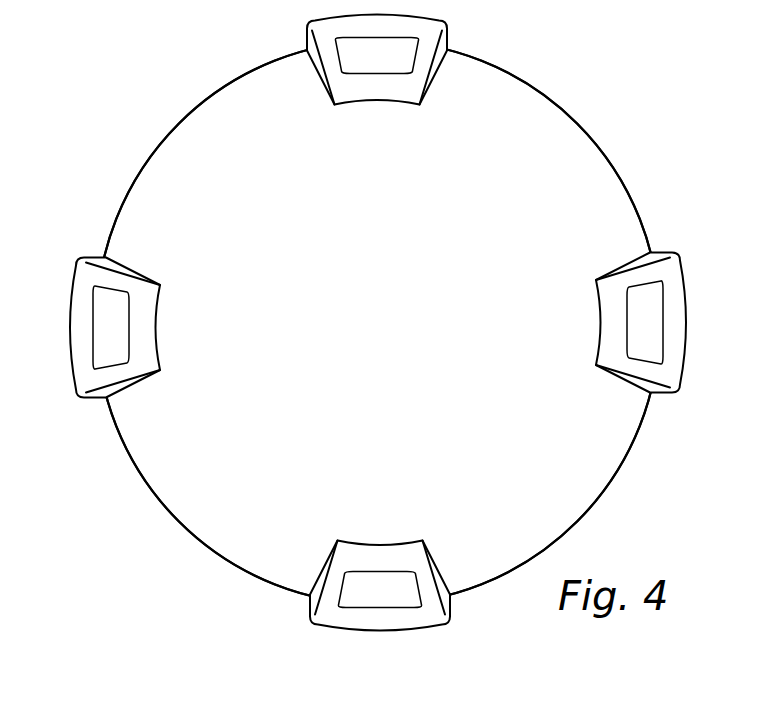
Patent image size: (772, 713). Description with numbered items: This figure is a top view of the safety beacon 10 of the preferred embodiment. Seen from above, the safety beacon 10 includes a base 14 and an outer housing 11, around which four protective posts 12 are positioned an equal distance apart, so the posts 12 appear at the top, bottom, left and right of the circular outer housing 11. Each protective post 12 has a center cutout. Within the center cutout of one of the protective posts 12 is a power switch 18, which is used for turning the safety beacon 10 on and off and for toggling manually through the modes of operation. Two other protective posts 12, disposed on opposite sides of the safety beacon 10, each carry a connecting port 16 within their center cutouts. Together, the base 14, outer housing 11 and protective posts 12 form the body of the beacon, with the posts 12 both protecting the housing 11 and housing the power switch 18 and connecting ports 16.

The safety beacon 10 is at (389, 348).
The outer housing 11 is at (497, 437).
The protective posts 12 is at (433, 29).
The base 14 is at (553, 143).
The connecting port 16 is at (650, 321).
The power switch 18 is at (373, 593).